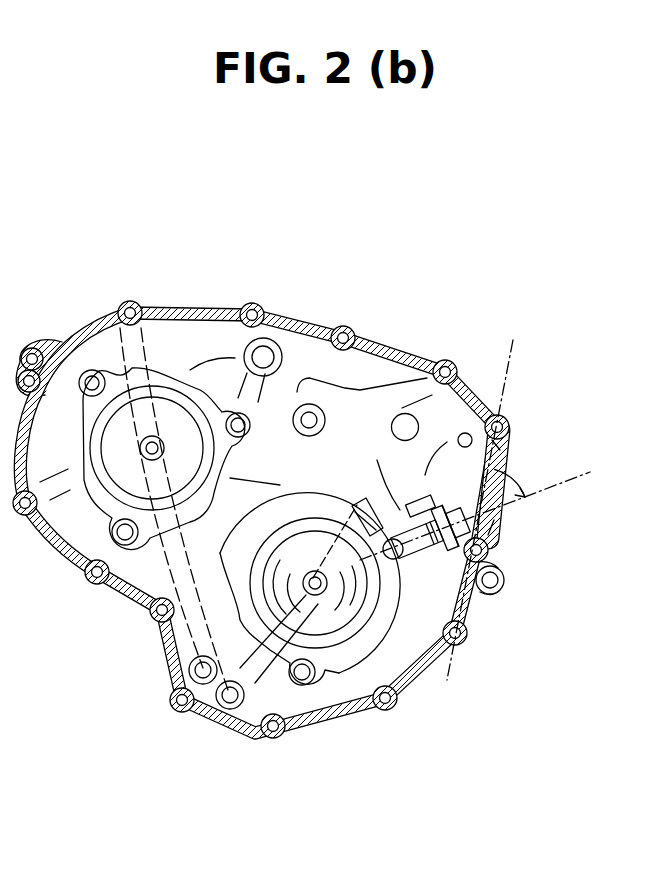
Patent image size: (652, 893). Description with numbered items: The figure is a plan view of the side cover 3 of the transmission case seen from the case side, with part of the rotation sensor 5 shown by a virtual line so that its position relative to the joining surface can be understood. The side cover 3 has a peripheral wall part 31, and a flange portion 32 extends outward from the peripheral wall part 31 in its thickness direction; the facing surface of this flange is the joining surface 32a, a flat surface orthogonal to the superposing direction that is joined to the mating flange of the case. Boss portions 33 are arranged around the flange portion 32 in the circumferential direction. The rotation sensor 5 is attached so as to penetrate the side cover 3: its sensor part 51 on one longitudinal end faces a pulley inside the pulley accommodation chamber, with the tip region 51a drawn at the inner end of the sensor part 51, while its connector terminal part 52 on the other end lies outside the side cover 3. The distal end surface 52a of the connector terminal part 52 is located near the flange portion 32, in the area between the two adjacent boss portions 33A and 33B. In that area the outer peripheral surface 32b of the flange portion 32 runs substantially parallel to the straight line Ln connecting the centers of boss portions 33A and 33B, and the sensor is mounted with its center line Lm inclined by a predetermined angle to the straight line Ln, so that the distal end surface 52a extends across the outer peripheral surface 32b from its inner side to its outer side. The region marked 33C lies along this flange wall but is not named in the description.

The side cover 3 is at (326, 446).
The peripheral wall part 31 is at (332, 724).
The flange portion 32 is at (385, 342).
The joining surface 32a is at (508, 447).
The outer peripheral surface 32b is at (498, 528).
The boss portion 33 is at (95, 583).
The boss portion 33A is at (510, 414).
The boss portion 33B is at (487, 594).
The right rim wall portion 33C is at (507, 472).
The rotation sensor 5 is at (476, 514).
The sensor part 51 is at (397, 535).
The sensor detecting tip 51a is at (398, 560).
The connector terminal part 52 is at (506, 500).
The distal end surface 52a is at (503, 515).
The straight line Ln is at (496, 493).
The center line Lm is at (496, 507).